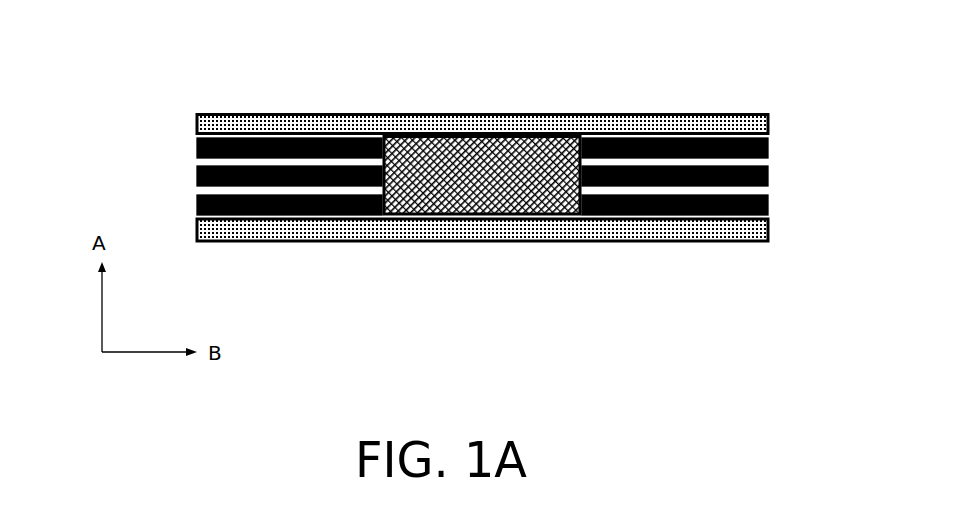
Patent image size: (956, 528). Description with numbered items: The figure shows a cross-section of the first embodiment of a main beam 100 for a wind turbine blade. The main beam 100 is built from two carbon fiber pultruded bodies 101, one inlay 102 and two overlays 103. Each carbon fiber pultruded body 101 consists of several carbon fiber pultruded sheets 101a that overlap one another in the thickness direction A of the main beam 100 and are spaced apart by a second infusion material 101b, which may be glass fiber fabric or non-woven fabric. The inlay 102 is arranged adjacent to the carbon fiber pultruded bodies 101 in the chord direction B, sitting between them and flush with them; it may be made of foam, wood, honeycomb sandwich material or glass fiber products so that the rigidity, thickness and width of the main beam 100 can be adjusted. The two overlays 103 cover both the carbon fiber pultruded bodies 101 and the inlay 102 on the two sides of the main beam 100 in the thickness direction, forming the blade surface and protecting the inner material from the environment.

The main beam 100 is at (430, 168).
The carbon fiber pultruded body 101 is at (430, 130).
The carbon fiber pultruded sheet 101a is at (197, 150).
The second infusion material 101b is at (197, 190).
The inlay 102 is at (518, 185).
The overlay 103 is at (390, 123).